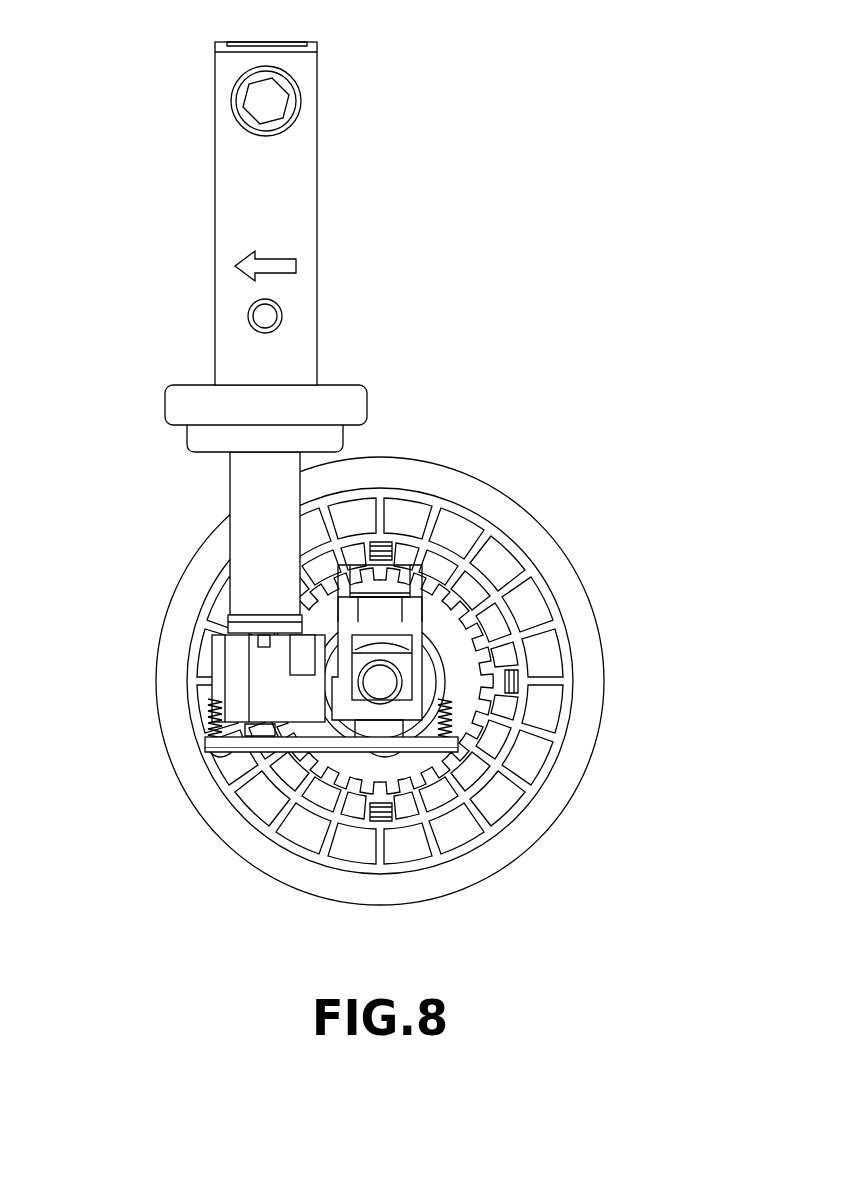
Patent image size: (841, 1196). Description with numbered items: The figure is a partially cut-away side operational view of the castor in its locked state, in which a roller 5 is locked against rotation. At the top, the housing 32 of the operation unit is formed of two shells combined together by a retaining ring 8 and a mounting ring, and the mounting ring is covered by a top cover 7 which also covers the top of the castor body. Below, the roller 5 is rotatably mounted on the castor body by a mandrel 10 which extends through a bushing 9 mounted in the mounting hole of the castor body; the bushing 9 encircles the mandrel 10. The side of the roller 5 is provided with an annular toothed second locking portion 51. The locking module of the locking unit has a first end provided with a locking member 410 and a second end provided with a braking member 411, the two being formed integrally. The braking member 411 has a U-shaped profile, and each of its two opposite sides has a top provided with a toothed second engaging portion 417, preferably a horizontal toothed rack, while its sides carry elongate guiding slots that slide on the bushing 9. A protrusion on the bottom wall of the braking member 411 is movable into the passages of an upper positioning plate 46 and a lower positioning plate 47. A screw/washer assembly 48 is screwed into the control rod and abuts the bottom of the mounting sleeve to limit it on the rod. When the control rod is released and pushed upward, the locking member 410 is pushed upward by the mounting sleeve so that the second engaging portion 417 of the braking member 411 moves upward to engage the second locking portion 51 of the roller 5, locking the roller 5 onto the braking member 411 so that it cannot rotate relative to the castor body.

The roller 5 is at (563, 573).
The top cover 7 is at (352, 398).
The retaining ring 8 is at (307, 45).
The bushing 9 is at (402, 662).
The mandrel 10 is at (381, 686).
The housing 32 is at (307, 210).
The upper positioning plate 46 is at (278, 742).
The lower positioning plate 47 is at (310, 752).
The screw/washer assembly 48 is at (260, 728).
The second locking portion 51 is at (445, 590).
The locking member 410 is at (237, 665).
The braking member 411 is at (413, 629).
The second engaging portion 417 is at (400, 577).